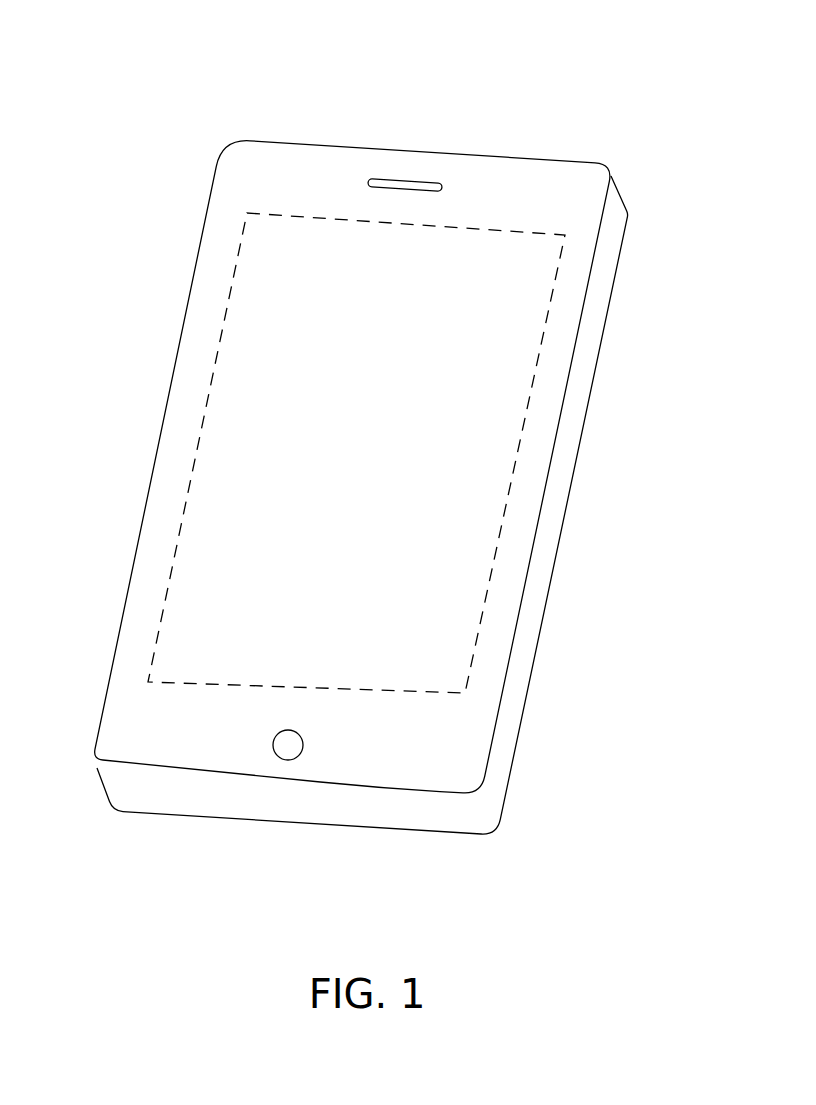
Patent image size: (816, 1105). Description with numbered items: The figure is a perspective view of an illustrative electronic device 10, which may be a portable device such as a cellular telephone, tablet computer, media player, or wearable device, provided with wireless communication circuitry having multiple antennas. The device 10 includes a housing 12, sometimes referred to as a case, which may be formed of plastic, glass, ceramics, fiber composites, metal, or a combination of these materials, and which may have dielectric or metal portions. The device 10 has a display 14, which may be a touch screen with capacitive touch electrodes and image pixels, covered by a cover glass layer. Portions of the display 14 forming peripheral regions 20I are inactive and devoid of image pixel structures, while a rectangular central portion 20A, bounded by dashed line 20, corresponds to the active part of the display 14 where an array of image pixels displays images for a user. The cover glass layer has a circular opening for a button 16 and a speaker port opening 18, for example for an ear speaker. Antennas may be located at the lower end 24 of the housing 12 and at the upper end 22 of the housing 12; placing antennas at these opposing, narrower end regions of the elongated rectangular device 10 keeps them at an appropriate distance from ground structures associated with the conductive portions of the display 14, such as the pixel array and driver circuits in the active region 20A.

The electronic device 10 is at (688, 81).
The housing 12 is at (602, 295).
The display 14 is at (502, 448).
The button 16 is at (288, 760).
The speaker port opening 18 is at (397, 178).
The dashed line 20 is at (192, 478).
The rectangular central portion 20A is at (205, 567).
The peripheral regions 20I is at (493, 183).
The upper end 22 is at (208, 137).
The lower end 24 is at (90, 692).